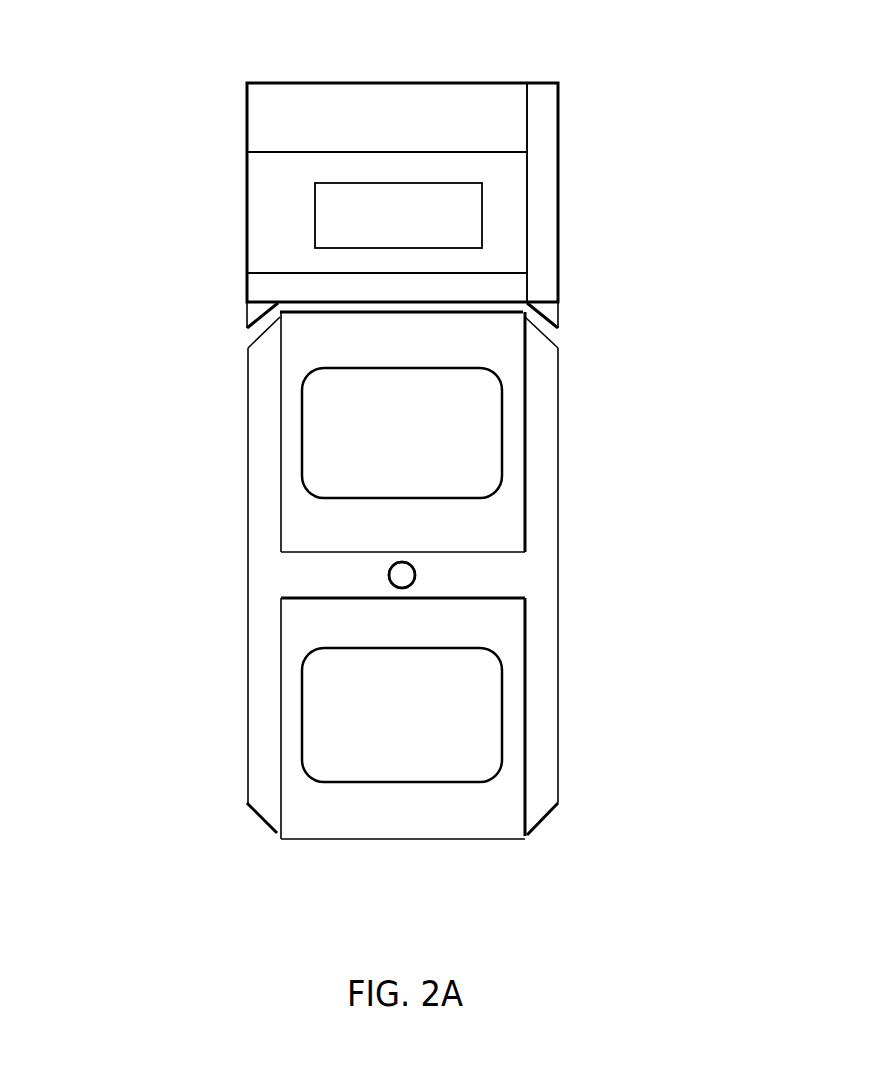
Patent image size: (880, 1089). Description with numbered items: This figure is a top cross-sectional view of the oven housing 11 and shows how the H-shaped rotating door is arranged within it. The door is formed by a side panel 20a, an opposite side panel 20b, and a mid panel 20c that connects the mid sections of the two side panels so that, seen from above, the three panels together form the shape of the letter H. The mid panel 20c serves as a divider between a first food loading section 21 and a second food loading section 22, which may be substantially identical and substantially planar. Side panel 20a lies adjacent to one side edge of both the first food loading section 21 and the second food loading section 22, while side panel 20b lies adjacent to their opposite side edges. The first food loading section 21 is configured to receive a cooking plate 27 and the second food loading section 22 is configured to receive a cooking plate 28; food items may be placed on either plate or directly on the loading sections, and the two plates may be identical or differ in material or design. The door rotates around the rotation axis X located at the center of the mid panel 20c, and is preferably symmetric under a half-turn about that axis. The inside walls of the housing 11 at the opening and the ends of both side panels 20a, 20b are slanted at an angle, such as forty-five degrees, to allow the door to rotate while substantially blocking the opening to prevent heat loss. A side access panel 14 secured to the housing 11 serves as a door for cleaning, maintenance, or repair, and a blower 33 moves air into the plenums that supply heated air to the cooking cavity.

The housing 11 is at (290, 82).
The blower 33 is at (407, 198).
The side access panel 14 is at (557, 237).
The second food loading section 22 is at (468, 348).
The cooking plate 28 is at (380, 455).
The mid panel 20c is at (468, 580).
The rotation axis X is at (402, 580).
The side panel 20a is at (220, 348).
The side panel 20b is at (578, 348).
The first food loading section 21 is at (325, 807).
The cooking plate 27 is at (380, 736).